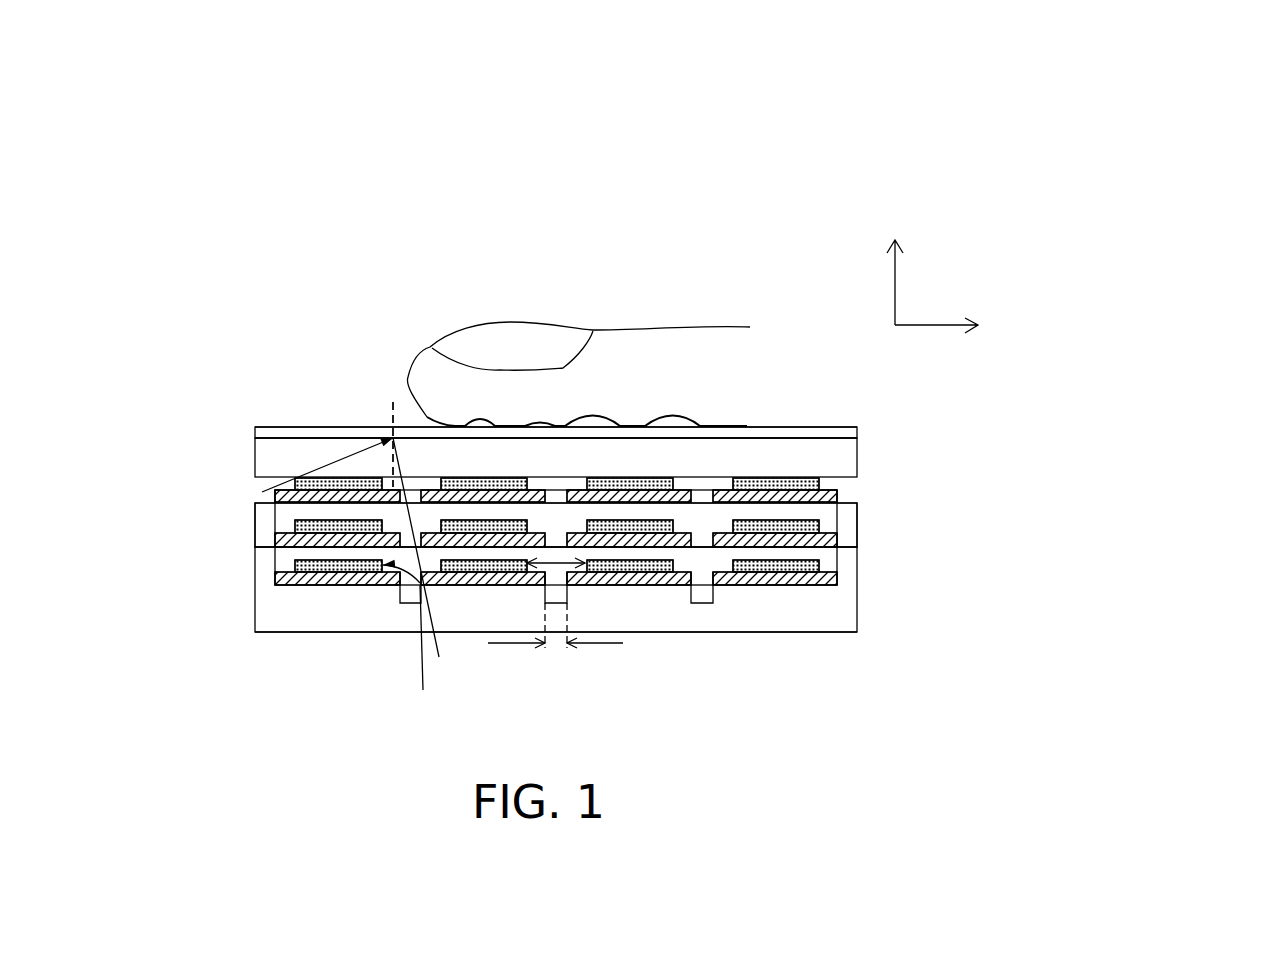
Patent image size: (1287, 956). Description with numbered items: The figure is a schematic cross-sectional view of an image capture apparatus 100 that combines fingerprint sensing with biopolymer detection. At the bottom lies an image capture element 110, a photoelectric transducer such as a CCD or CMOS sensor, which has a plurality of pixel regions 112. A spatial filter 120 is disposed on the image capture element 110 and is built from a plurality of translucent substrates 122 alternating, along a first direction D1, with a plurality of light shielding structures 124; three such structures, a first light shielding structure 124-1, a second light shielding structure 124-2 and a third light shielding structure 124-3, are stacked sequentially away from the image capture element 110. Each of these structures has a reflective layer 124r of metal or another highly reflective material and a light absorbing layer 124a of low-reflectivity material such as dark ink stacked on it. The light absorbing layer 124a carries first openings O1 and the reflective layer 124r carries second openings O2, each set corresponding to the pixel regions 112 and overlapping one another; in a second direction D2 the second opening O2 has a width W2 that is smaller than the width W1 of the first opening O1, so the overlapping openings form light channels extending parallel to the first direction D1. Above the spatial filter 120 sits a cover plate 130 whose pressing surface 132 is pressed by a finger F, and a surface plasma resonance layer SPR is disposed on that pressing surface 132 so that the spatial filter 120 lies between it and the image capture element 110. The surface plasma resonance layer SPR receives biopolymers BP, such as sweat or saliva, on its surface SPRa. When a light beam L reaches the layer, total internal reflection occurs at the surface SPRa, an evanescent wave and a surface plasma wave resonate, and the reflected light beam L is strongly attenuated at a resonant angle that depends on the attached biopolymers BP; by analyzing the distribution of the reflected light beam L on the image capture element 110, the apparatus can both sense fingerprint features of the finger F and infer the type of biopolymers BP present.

The image capture apparatus 100 is at (1047, 752).
The image capture element 110 is at (847, 622).
The pixel regions 112 is at (700, 603).
The spatial filter 120 is at (148, 263).
The translucent substrate 122 is at (262, 523).
The light shielding structure 124 is at (556, 537).
The first light shielding structure 124-1 is at (1033, 528).
The second light shielding structure 124-2 is at (1113, 468).
The third light shielding structure 124-3 is at (1040, 400).
The light absorbing layer 124a is at (835, 483).
The reflective layer 124r is at (835, 497).
The cover plate 130 is at (260, 458).
The pressing surface 132 is at (352, 437).
The surface plasma resonance layer SPR is at (255, 430).
The surface of the surface plasma resonance layer SPRa is at (297, 426).
The light beam L is at (391, 437).
The finger F is at (578, 344).
The biopolymers BP is at (487, 412).
The first openings O1 is at (418, 625).
The second openings O2 is at (422, 653).
The width of first opening W1 is at (556, 551).
The width of second opening W2 is at (555, 645).
The first direction D1 is at (895, 260).
The second direction D2 is at (957, 324).